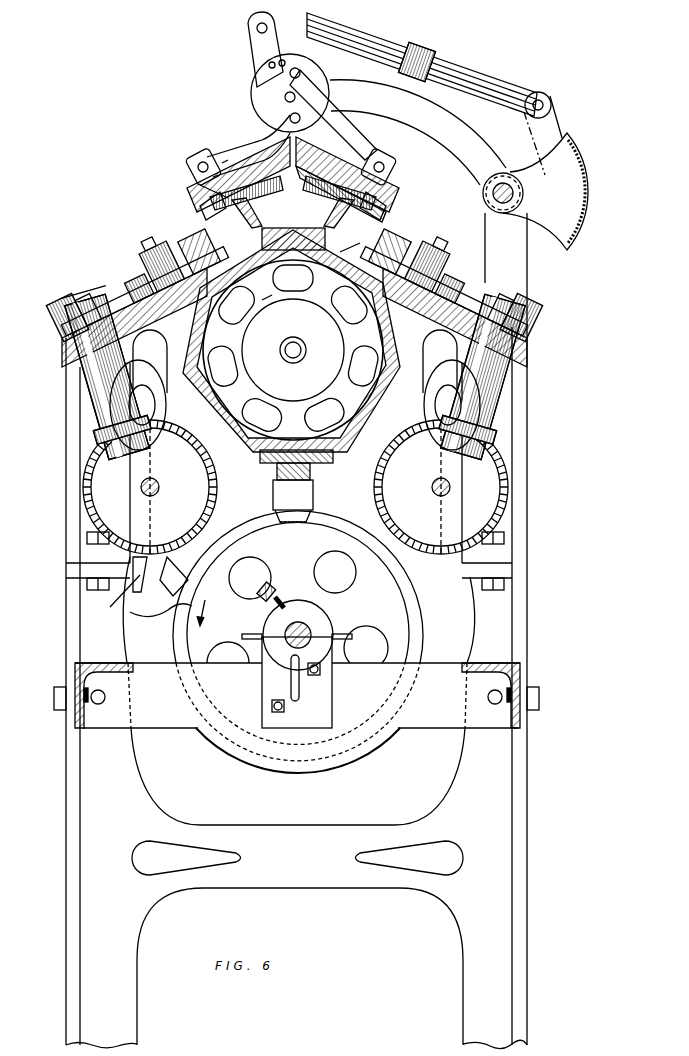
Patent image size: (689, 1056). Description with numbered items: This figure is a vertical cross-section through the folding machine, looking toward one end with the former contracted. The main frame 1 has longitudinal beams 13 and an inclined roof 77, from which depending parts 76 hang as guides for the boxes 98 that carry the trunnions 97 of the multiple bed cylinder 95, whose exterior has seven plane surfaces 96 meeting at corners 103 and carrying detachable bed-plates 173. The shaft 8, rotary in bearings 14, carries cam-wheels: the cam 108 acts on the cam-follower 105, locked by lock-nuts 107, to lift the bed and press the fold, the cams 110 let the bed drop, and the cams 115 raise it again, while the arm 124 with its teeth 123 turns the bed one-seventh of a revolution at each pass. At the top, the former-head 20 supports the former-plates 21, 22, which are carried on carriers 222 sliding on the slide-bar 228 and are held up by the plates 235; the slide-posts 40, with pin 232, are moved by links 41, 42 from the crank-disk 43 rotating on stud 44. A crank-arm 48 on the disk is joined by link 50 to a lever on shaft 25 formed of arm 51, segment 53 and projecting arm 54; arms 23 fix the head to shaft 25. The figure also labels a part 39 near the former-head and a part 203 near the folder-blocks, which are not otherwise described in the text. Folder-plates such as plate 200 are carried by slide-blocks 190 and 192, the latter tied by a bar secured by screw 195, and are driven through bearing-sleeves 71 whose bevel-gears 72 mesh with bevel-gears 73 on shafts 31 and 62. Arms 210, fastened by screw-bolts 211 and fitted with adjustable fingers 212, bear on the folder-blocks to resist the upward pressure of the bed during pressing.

The main frame 1 is at (72, 778).
The shaft 8 is at (306, 628).
The longitudinal beams 13 is at (76, 668).
The bearings 14 is at (292, 652).
The former-head 20 is at (192, 193).
The former-plate 21 is at (350, 239).
The former-plate 22 is at (208, 251).
The arms 23 is at (418, 132).
The shaft 25 is at (516, 193).
The shaft 31 is at (439, 497).
The jaw block 39 is at (392, 186).
The slide-posts 40 is at (193, 160).
The link 41 is at (360, 137).
The link 42 is at (240, 140).
The crank-disk 43 is at (258, 80).
The stud 44 is at (285, 97).
The crank-arm 48 is at (248, 27).
The link 50 is at (455, 70).
The arm 51 is at (518, 176).
The segment 53 is at (585, 186).
The arm 54 is at (552, 118).
The shaft 62 is at (160, 484).
The bearing-sleeves 71 is at (98, 372).
The bevel-gear 72 is at (110, 437).
The bevel-gears 73 is at (152, 548).
The depending parts 76 is at (295, 390).
The inclined roof 77 is at (62, 348).
The multiple bed cylinder 95 is at (304, 347).
The plane surfaces 96 is at (193, 385).
The trunnions 97 is at (293, 350).
The boxes 98 is at (294, 450).
The corners 103 is at (293, 228).
The cam-follower 105 is at (313, 492).
The lock-nuts 107 is at (274, 512).
The cam 108 is at (420, 597).
The cams 110 is at (165, 628).
The cams 115 is at (188, 560).
The teeth 123 is at (115, 600).
The arm 124 is at (172, 600).
The bed-plates 173 is at (222, 450).
The block 190 is at (460, 258).
The slide-block 192 is at (150, 262).
The screw 195 is at (172, 245).
The plate 200 is at (269, 294).
The block 203 is at (366, 262).
The arms 210 is at (100, 268).
The screw-bolts 211 is at (76, 276).
The adjustable finger 212 is at (440, 228).
The carriers 222 is at (222, 200).
The slide-bar 228 is at (222, 163).
The pin 232 is at (228, 198).
The plates 235 is at (293, 193).